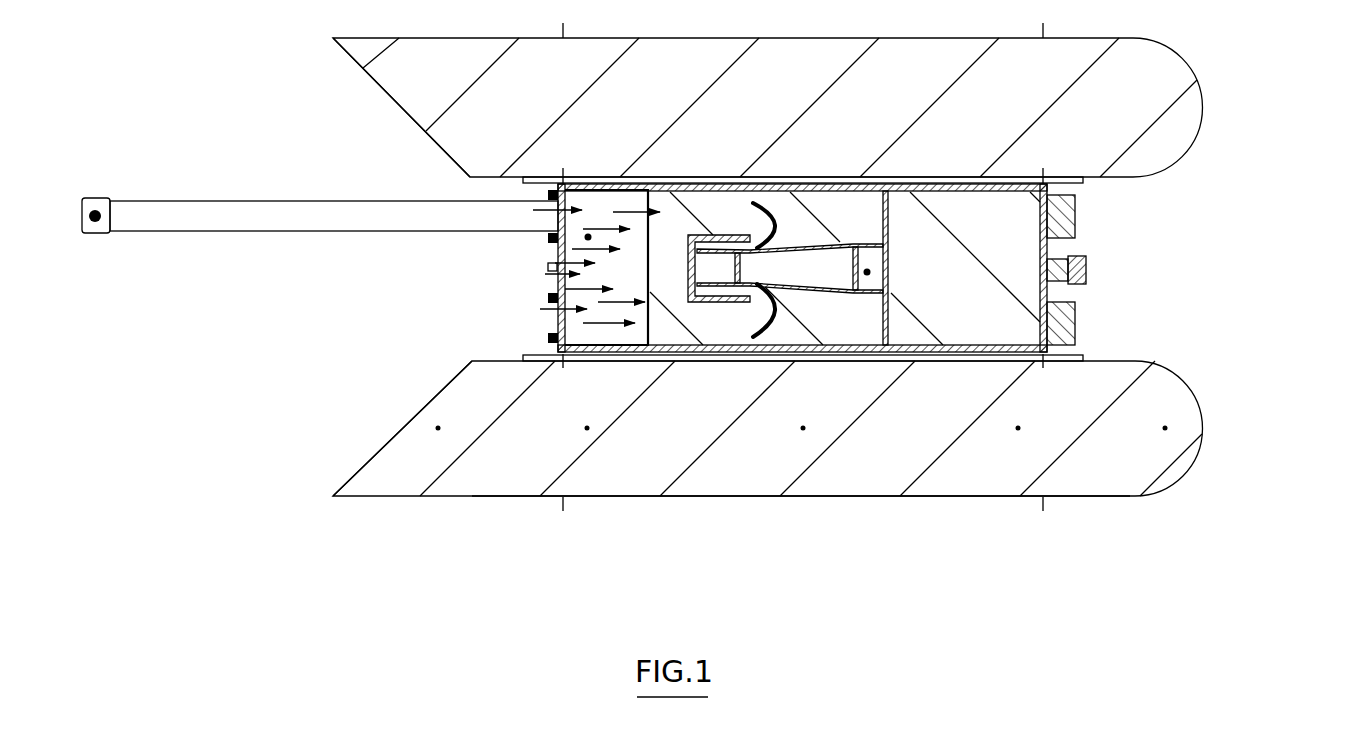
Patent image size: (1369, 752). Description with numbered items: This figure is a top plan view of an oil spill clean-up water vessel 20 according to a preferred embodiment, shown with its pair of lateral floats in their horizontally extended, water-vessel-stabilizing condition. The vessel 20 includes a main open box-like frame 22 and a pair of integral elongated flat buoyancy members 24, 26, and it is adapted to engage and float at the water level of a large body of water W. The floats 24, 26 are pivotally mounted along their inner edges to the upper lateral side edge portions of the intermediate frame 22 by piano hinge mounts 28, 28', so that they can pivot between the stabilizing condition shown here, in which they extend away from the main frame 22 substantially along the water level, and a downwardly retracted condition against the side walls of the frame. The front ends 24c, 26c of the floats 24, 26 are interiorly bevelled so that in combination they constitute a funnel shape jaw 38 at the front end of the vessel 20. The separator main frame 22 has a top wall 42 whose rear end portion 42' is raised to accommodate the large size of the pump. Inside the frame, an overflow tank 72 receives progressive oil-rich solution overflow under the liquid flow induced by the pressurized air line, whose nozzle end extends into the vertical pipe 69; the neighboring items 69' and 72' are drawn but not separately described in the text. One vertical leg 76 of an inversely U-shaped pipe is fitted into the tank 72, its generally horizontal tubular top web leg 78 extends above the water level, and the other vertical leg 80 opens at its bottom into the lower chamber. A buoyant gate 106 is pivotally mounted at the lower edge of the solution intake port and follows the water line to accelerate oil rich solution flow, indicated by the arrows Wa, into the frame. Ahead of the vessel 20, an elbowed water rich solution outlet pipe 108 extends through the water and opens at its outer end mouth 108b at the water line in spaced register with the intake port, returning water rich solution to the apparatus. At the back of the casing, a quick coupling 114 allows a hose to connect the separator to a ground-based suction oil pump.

The water vessel 20 is at (732, 499).
The main open box-like frame 22 is at (1012, 294).
The buoyancy member 24 is at (723, 122).
The front end of float 24c is at (400, 111).
The buoyancy member 26 is at (757, 468).
The front end of float 26c is at (400, 428).
The piano hinge mount 28 is at (904, 191).
The piano hinge mount 28' is at (909, 373).
The funnel shape jaw 38 is at (420, 276).
The top wall 42 is at (745, 269).
The rear end portion of top wall 42' is at (965, 268).
The vertical pipe 69 is at (1169, 323).
The upper end block 69' is at (1169, 220).
The overflow tank 72 is at (775, 192).
The lower flame jet 72' is at (771, 339).
The vertical leg 76 is at (712, 268).
The tubular top web leg 78 is at (835, 282).
The vertical leg 80 is at (870, 271).
The buoyant gate 106 is at (585, 238).
The elbowed water rich solution outlet pipe 108 is at (327, 233).
The outer end mouth 108b is at (95, 210).
The quick coupling 114 is at (1098, 268).
The large body of water W is at (541, 277).
The oil rich solution intake flow arrows Wa is at (552, 320).